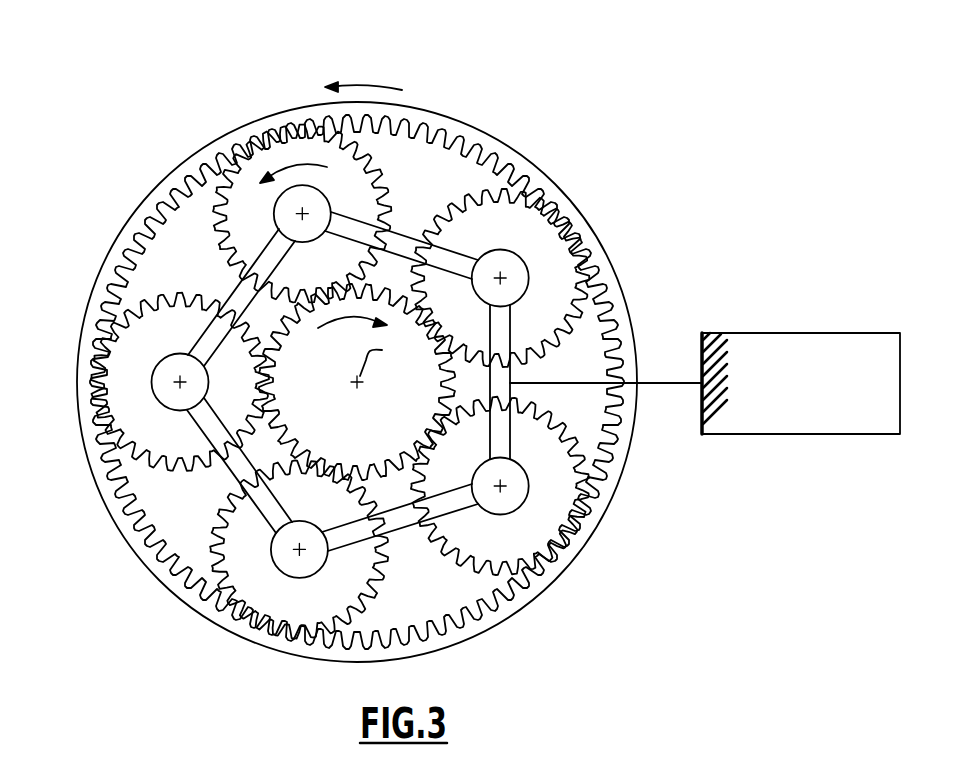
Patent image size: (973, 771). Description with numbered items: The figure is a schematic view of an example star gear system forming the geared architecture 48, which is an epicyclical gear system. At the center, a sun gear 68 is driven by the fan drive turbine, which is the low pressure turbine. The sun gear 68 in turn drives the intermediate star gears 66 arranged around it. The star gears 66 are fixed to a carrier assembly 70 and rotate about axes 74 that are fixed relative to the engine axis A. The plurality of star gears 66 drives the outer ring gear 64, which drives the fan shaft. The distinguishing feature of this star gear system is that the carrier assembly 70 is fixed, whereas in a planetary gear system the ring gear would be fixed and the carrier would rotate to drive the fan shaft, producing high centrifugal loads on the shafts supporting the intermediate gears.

The geared architecture 48 is at (462, 75).
The ring gear 64 is at (303, 95).
The star gears 66 is at (398, 190).
The sun gear 68 is at (309, 407).
The carrier assembly 70 is at (900, 405).
The axes 74 is at (273, 207).